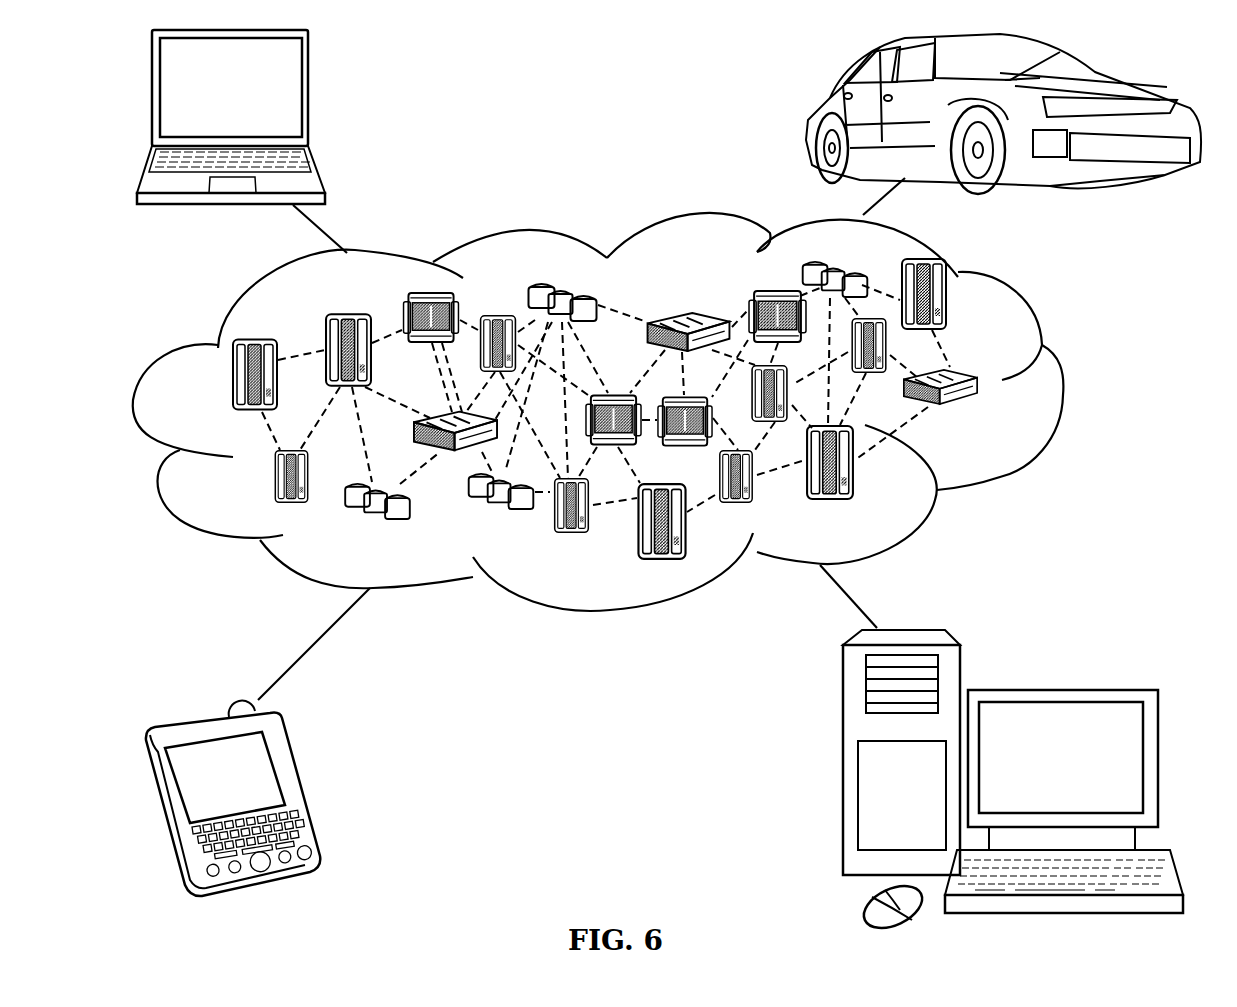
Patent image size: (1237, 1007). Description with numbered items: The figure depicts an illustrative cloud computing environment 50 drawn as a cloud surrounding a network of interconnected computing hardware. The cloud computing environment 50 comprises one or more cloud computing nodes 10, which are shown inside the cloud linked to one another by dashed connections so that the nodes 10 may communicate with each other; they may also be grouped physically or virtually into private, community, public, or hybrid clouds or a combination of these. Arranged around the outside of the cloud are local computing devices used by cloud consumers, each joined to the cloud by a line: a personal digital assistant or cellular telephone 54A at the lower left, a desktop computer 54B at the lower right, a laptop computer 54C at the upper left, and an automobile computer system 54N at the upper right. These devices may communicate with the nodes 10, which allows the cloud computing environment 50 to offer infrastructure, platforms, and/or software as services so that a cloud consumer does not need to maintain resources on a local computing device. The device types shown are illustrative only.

The cloud computing environment 50 is at (633, 439).
The cloud computing node 10 is at (1000, 418).
The personal digital assistant or cellular telephone 54A is at (298, 792).
The desktop computer 54B is at (1059, 690).
The laptop computer 54C is at (308, 95).
The automobile computer system 54N is at (808, 114).